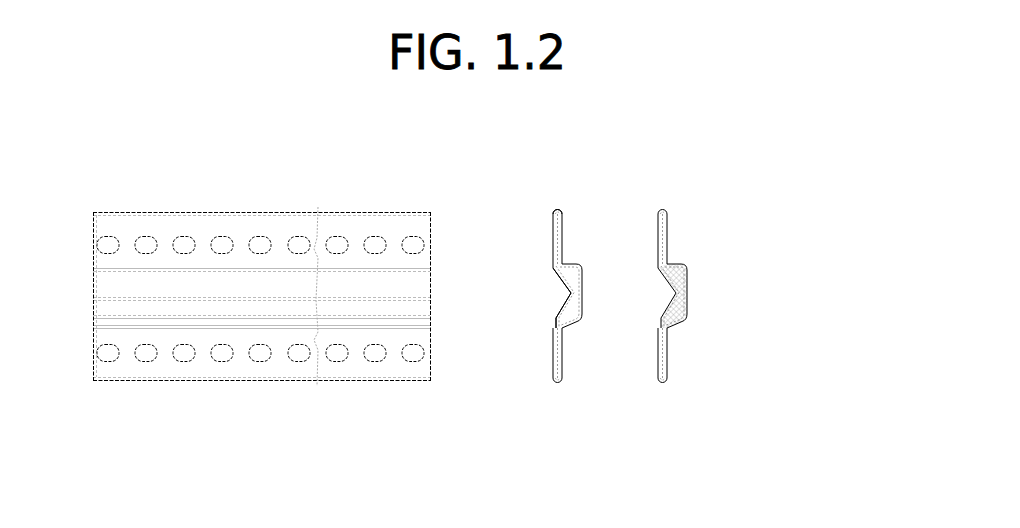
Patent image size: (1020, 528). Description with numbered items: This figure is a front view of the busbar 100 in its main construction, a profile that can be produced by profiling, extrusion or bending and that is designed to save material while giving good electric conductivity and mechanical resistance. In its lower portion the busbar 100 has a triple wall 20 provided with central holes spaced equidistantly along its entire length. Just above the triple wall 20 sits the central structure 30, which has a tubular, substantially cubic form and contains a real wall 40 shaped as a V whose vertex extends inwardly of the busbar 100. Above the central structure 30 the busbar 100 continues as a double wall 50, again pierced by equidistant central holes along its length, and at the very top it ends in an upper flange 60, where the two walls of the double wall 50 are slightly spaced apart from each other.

The busbar 100 is at (712, 425).
The triple wall 20 is at (282, 368).
The double wall 50 is at (283, 237).
The central structure 30 is at (583, 303).
The real wall 40 is at (560, 282).
The upper flange 60 is at (560, 219).